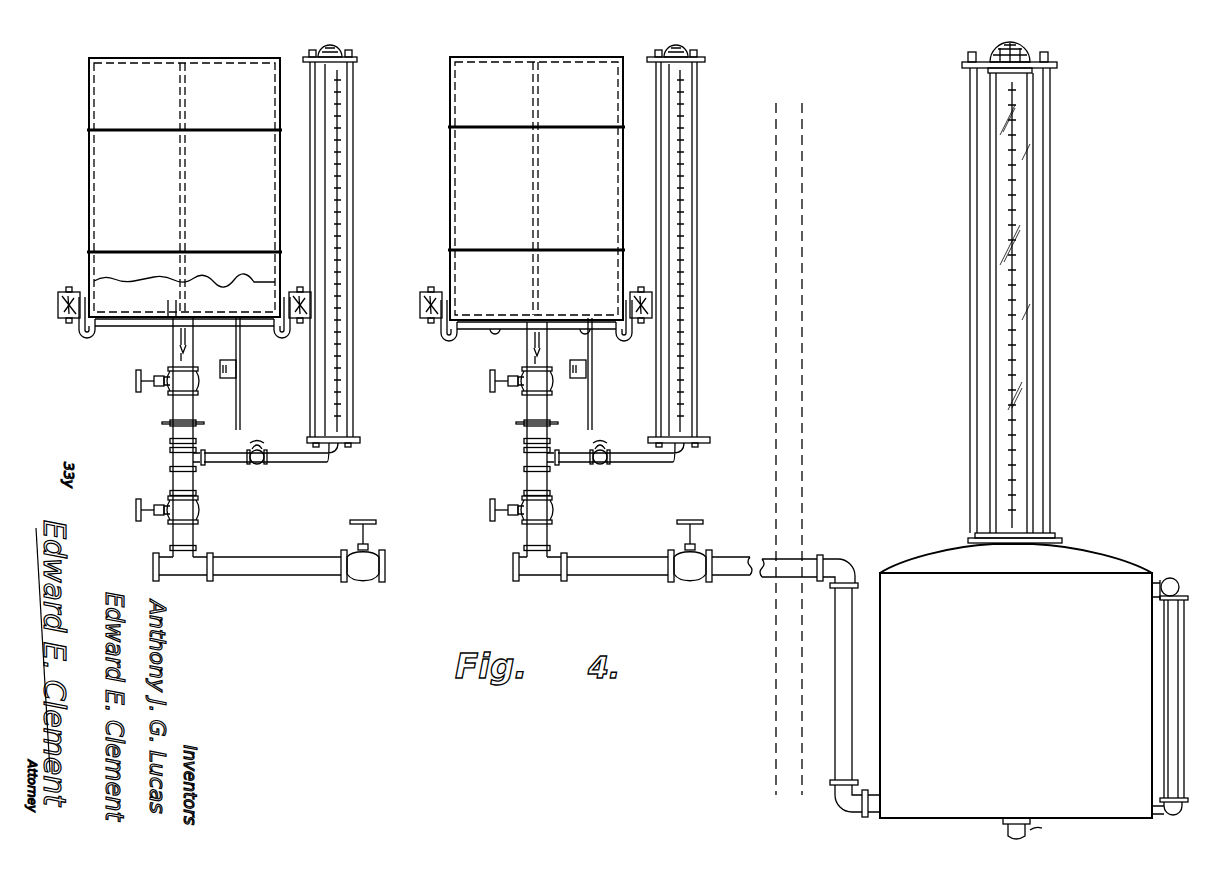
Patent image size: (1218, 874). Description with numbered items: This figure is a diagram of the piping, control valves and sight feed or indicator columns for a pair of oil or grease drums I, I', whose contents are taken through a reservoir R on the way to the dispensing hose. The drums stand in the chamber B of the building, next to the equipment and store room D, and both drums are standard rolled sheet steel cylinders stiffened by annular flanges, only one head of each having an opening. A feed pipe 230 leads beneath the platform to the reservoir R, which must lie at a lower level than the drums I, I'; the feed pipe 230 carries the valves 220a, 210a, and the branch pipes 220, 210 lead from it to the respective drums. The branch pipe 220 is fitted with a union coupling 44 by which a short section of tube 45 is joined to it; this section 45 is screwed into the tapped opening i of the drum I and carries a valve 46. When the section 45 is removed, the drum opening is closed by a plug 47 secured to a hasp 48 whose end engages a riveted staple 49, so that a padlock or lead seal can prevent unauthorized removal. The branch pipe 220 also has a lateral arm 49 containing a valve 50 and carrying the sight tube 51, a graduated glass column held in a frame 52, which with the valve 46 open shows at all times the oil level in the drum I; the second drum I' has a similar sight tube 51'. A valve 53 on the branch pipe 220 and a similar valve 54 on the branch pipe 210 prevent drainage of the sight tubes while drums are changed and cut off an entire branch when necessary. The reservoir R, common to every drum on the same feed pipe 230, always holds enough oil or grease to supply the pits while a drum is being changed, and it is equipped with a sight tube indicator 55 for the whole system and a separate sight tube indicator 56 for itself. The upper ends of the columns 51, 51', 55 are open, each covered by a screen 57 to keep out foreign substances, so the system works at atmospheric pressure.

The drum I is at (175, 190).
The drum I' is at (530, 199).
The tapped opening i is at (168, 308).
The lateral arm 49 is at (124, 328).
The short section of tube 45 is at (170, 350).
The valve 46 is at (172, 388).
The plug 47 is at (230, 362).
The hasp 48 is at (240, 400).
The union coupling 44 is at (166, 428).
The valve 50 is at (259, 447).
The branch pipe 220 is at (188, 484).
The valve 53 is at (194, 508).
The valve 220a is at (368, 558).
The branch pipe 210 is at (530, 480).
The valve 54 is at (550, 505).
The valve 210a is at (698, 558).
The feed pipe 230 is at (790, 560).
The frame 52 is at (318, 165).
The sight tube 51 is at (355, 250).
The sight tube 51' is at (692, 248).
The screen 57 is at (342, 47).
The sight tube indicator 55 is at (993, 242).
The sight tube indicator 56 is at (1183, 600).
The chamber B is at (749, 449).
The equipment and store room D is at (827, 449).
The reservoir R is at (1016, 691).